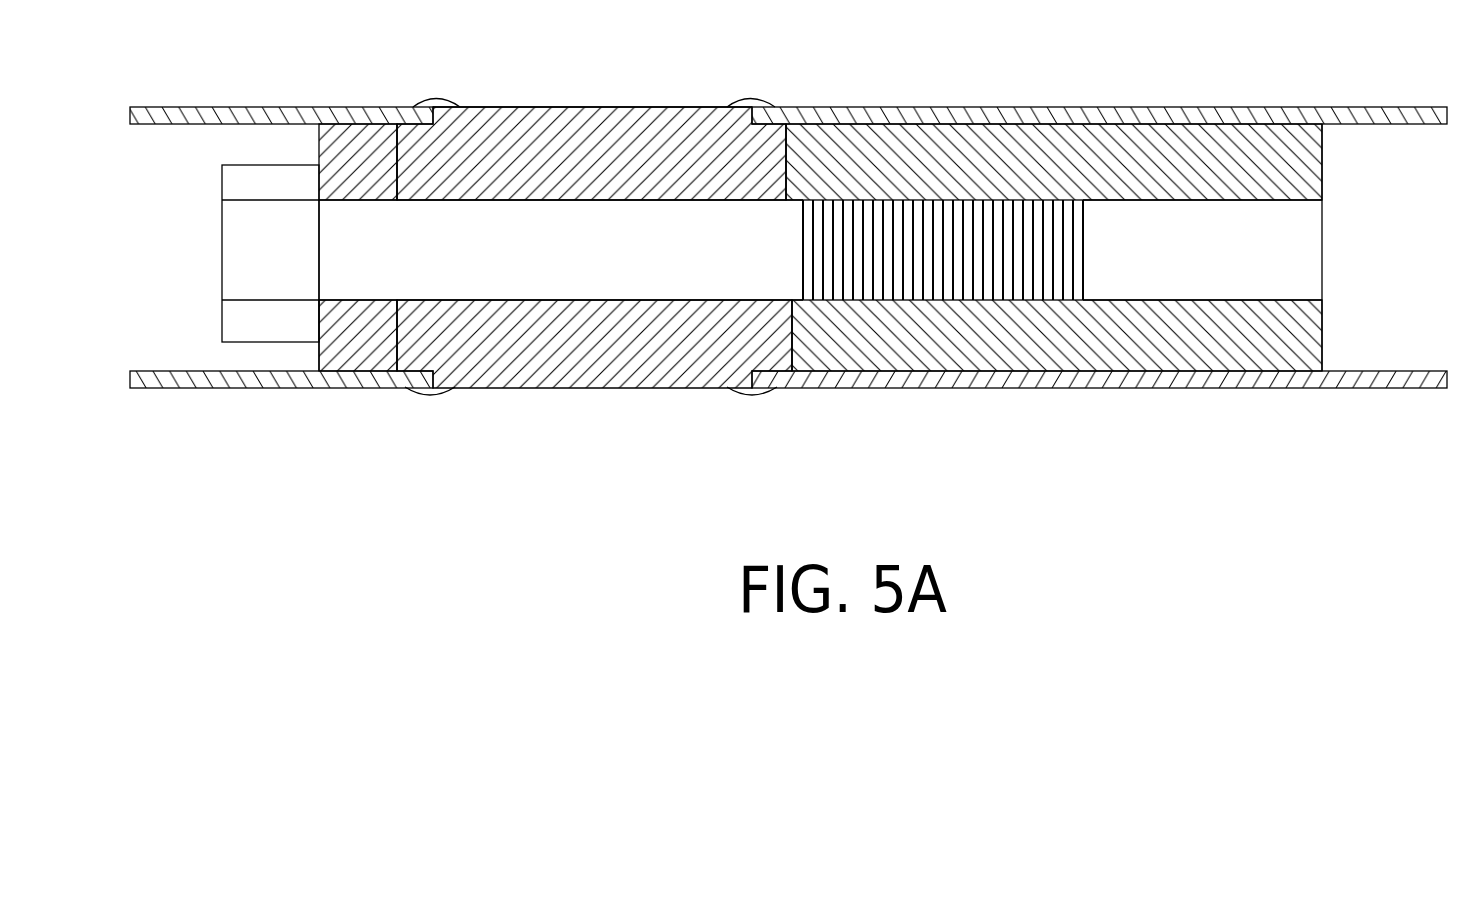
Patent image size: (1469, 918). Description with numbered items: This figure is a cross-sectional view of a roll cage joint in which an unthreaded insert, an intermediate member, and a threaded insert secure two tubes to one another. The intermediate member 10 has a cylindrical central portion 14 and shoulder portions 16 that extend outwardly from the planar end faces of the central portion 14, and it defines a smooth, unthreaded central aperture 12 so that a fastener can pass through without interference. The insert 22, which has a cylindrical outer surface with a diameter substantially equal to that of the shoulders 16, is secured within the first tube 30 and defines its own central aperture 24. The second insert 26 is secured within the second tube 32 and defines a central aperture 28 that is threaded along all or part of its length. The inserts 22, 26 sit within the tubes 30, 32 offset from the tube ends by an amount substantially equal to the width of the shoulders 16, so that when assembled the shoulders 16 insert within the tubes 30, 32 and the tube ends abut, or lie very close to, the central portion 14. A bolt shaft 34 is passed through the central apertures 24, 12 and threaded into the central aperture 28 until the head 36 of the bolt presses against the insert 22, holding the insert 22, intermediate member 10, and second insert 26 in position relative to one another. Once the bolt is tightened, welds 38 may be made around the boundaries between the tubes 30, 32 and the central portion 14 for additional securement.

The intermediate member 10 is at (604, 98).
The central aperture 12 is at (575, 298).
The central portion 14 is at (543, 143).
The shoulder portions 16 is at (407, 142).
The insert 22 is at (358, 163).
The central aperture 24 is at (363, 300).
The second insert 26 is at (1003, 150).
The central aperture 28 is at (1273, 201).
The first tube 30 is at (225, 117).
The second tube 32 is at (1157, 107).
The bolt shaft 34 is at (590, 233).
The head 36 is at (270, 270).
The welds 38 is at (440, 103).